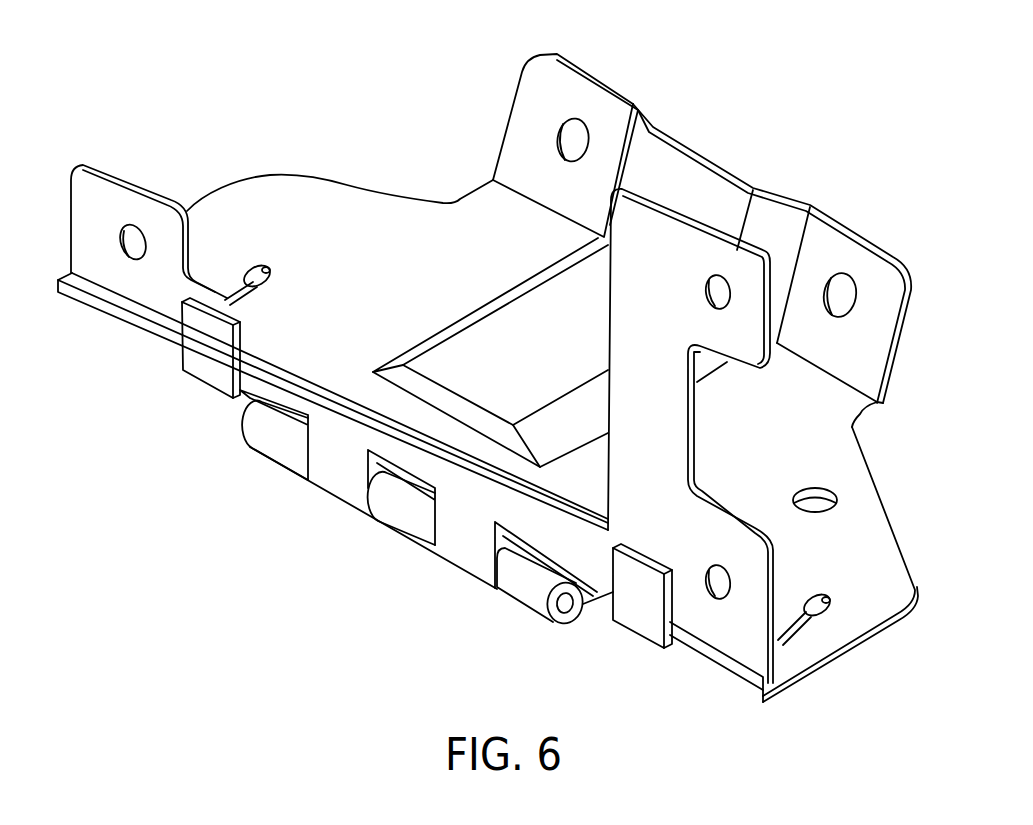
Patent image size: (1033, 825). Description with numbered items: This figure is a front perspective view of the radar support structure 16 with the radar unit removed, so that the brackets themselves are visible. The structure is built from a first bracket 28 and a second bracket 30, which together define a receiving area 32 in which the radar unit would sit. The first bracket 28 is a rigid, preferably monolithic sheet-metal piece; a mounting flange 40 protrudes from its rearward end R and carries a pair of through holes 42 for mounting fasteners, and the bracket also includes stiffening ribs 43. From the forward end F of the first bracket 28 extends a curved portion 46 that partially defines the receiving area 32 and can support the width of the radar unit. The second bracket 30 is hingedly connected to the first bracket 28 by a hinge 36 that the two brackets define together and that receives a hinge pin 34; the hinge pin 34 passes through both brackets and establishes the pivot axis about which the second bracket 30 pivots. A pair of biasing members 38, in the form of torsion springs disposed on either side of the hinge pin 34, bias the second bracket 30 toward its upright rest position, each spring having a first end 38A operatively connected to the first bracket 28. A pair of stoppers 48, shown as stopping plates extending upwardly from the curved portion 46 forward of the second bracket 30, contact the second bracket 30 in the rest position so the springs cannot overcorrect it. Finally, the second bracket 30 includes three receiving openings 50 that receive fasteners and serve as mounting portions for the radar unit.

The radar support structure 16 is at (753, 83).
The first bracket 28 is at (868, 682).
The second bracket 30 is at (126, 170).
The receiving area 32 is at (78, 295).
The hinge pin 34 is at (567, 605).
The hinge 36 is at (390, 528).
The biasing member 38 is at (227, 290).
The first end 38A is at (257, 270).
The mounting flange 40 is at (702, 186).
The through hole 42 is at (560, 135).
The stiffening rib 43 is at (542, 318).
The curved portion 46 is at (135, 317).
The stopper 48 is at (213, 358).
The receiving opening 50 is at (130, 248).
The rearward end R is at (870, 422).
The forward end F is at (686, 682).